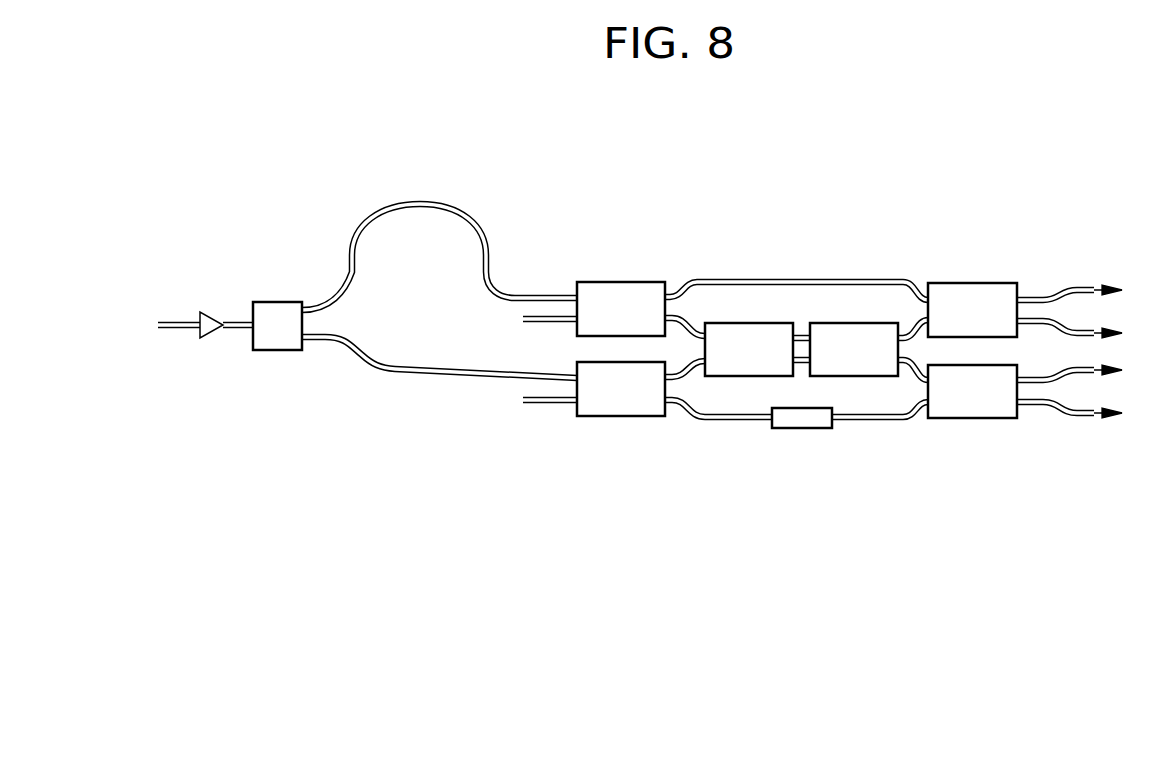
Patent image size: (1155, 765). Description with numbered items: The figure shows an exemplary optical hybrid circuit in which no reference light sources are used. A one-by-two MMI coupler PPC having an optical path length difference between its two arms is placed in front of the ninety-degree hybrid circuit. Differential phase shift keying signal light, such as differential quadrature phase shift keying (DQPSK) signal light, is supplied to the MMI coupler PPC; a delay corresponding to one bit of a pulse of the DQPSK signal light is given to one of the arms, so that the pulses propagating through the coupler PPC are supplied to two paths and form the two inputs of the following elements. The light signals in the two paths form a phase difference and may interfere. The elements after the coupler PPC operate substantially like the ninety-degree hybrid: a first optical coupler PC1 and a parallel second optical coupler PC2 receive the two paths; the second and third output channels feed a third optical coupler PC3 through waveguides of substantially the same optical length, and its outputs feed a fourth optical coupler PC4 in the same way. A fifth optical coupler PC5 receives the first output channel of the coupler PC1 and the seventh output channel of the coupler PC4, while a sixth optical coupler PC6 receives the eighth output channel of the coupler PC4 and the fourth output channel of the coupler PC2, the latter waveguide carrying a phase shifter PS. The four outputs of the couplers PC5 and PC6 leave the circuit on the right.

The differential quadrature phase shift keying signal light DQPSK is at (204, 347).
The 1:2 MMI coupler PPC is at (277, 302).
The first optical coupler PC1 is at (601, 282).
The second optical coupler PC2 is at (616, 417).
The third optical coupler PC3 is at (723, 323).
The fourth optical coupler PC4 is at (847, 323).
The fifth optical coupler PC5 is at (972, 283).
The sixth optical coupler PC6 is at (977, 420).
The phase shifter PS is at (818, 430).